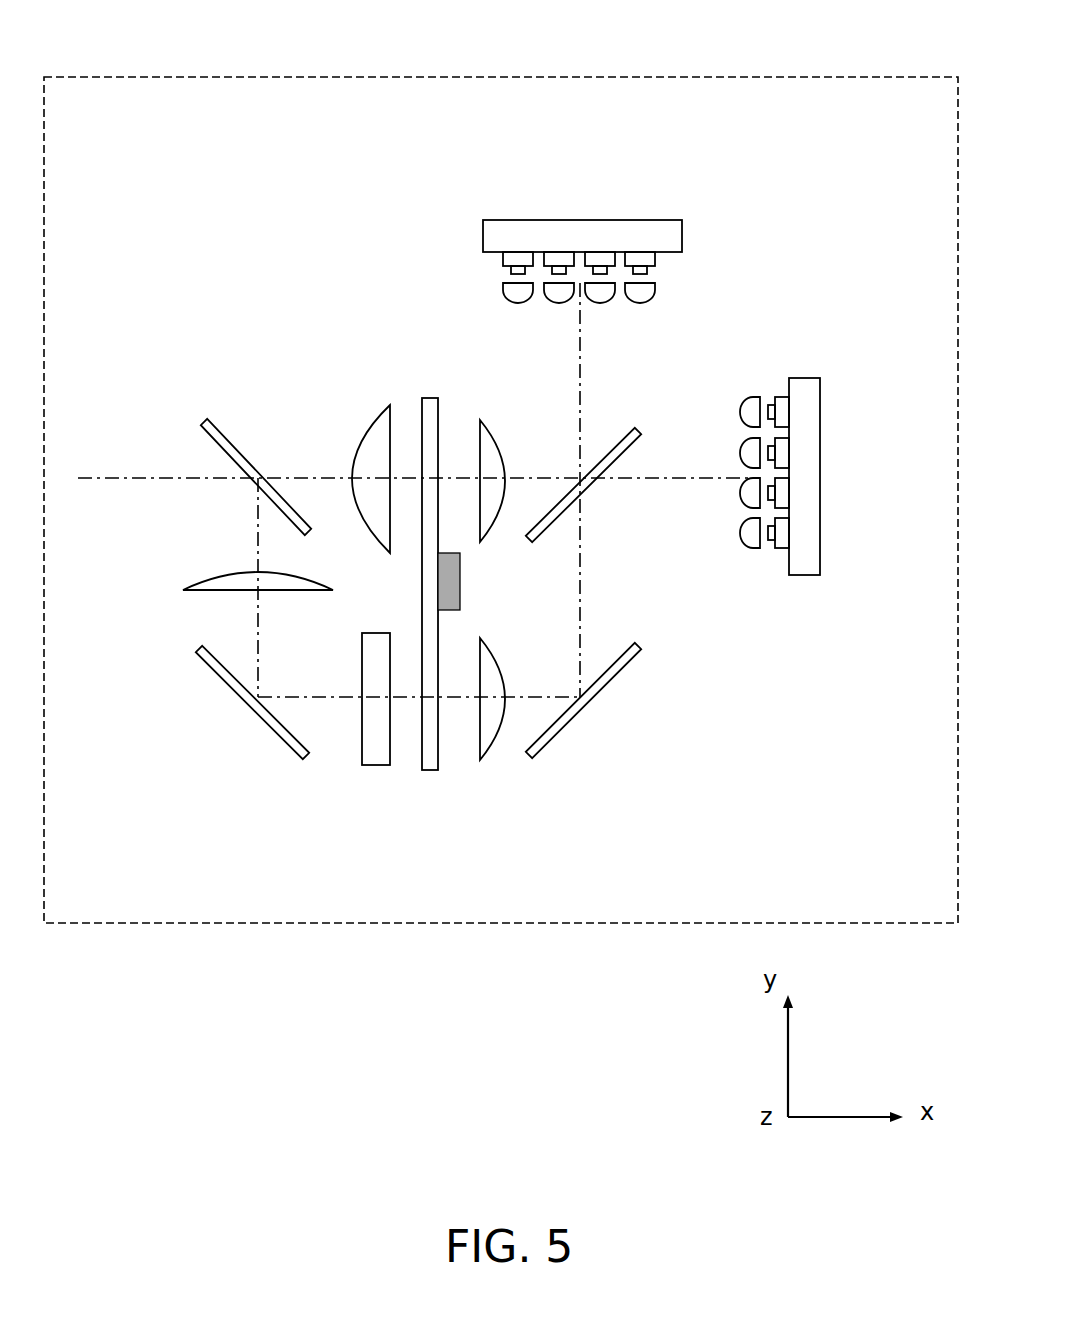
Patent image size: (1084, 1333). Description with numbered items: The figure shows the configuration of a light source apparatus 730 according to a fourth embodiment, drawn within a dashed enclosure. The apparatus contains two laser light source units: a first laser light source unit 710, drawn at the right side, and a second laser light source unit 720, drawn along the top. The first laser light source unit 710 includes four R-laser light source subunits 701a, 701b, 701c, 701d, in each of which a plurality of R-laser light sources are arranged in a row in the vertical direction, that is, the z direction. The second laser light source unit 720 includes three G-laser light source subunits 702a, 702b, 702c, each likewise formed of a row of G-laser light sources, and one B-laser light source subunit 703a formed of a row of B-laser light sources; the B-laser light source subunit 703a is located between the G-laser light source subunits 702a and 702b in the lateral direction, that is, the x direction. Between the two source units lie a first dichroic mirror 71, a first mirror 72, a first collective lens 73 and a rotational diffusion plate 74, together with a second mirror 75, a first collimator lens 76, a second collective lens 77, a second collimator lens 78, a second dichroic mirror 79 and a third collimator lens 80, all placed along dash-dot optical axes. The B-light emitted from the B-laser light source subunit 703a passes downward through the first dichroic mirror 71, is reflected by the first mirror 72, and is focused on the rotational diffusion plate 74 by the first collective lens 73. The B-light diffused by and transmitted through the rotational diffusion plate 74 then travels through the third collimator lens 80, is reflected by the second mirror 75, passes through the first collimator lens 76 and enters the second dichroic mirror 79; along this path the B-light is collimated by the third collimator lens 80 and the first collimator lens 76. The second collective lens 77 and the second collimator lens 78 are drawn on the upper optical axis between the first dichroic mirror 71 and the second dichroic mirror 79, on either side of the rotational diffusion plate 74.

The light source apparatus 730 is at (588, 75).
The second laser light source unit 720 is at (680, 246).
The G-laser light source subunit 702a is at (518, 258).
The G-laser light source subunit 702b is at (600, 258).
The G-laser light source subunit 702c is at (642, 259).
The B-laser light source subunit 703a is at (558, 258).
The first laser light source unit 710 is at (803, 388).
The R-laser light source subunit 701a is at (782, 409).
The R-laser light source subunit 701b is at (782, 457).
The R-laser light source subunit 701c is at (782, 497).
The R-laser light source subunit 701d is at (782, 537).
The first dichroic mirror 71 is at (640, 430).
The first mirror 72 is at (622, 665).
The first collective lens 73 is at (487, 668).
The rotational diffusion plate 74 is at (430, 400).
The second mirror 75 is at (287, 740).
The first collimator lens 76 is at (205, 591).
The second collective lens 77 is at (488, 446).
The second collimator lens 78 is at (378, 432).
The second dichroic mirror 79 is at (192, 420).
The third collimator lens 80 is at (380, 768).